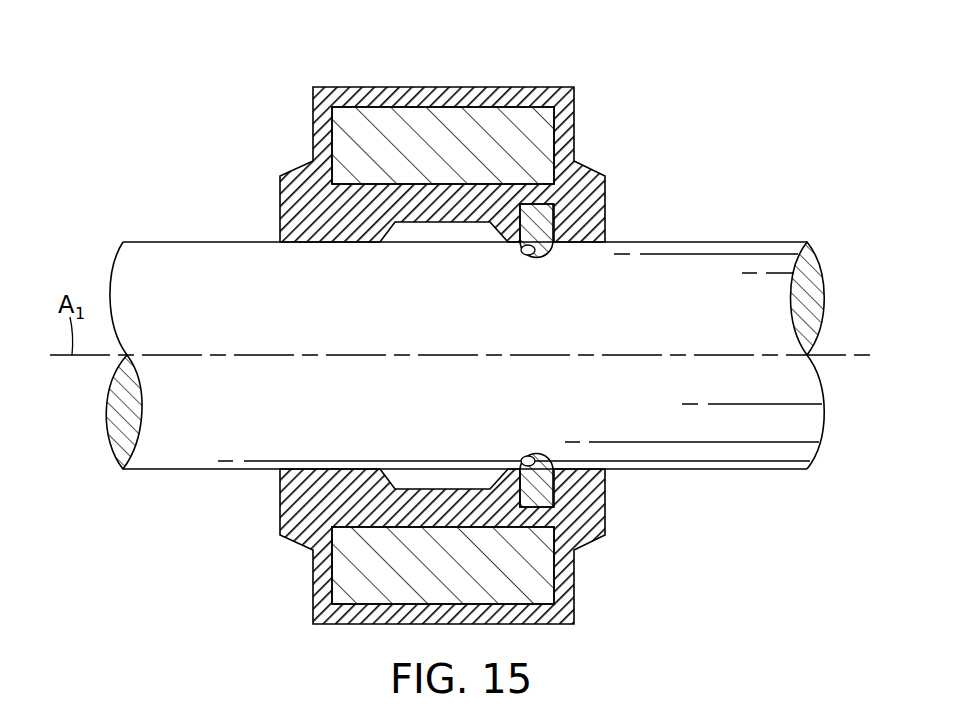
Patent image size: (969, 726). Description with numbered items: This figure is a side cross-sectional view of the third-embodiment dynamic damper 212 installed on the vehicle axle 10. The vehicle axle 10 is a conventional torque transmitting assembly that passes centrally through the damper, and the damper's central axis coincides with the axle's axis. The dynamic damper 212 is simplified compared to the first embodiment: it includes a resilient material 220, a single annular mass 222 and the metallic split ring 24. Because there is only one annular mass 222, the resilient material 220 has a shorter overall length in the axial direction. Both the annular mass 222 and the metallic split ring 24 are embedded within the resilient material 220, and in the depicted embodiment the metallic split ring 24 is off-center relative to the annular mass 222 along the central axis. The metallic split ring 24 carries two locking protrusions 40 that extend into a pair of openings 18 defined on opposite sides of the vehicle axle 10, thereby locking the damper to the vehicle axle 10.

The vehicle axle 10 is at (180, 232).
The dynamic damper 212 is at (442, 139).
The resilient material 220 is at (477, 97).
The annular mass 222 is at (520, 146).
The metallic split ring 24 is at (542, 488).
The openings 18 is at (521, 248).
The locking protrusions 40 is at (547, 258).